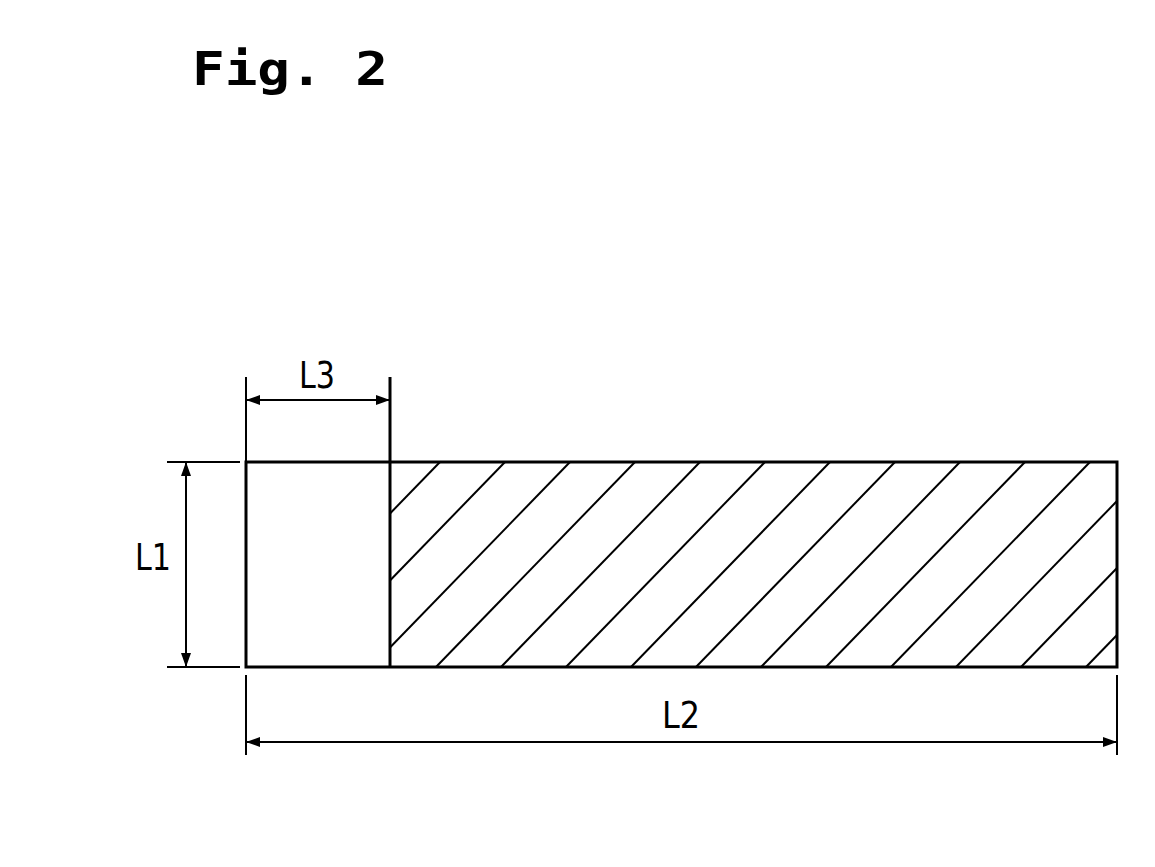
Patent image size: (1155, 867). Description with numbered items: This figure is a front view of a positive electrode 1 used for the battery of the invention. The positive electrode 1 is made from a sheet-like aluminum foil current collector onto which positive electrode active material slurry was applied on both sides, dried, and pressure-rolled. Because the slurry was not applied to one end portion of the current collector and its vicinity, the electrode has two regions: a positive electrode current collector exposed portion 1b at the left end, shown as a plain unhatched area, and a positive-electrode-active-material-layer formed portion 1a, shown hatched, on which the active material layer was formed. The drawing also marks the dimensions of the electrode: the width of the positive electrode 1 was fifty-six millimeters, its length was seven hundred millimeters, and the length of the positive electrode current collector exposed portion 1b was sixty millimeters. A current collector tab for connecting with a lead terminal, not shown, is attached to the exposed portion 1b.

The positive electrode 1 is at (843, 428).
The positive-electrode-active-material-layer formed portion 1a is at (573, 498).
The positive electrode current collector exposed portion 1b is at (355, 552).